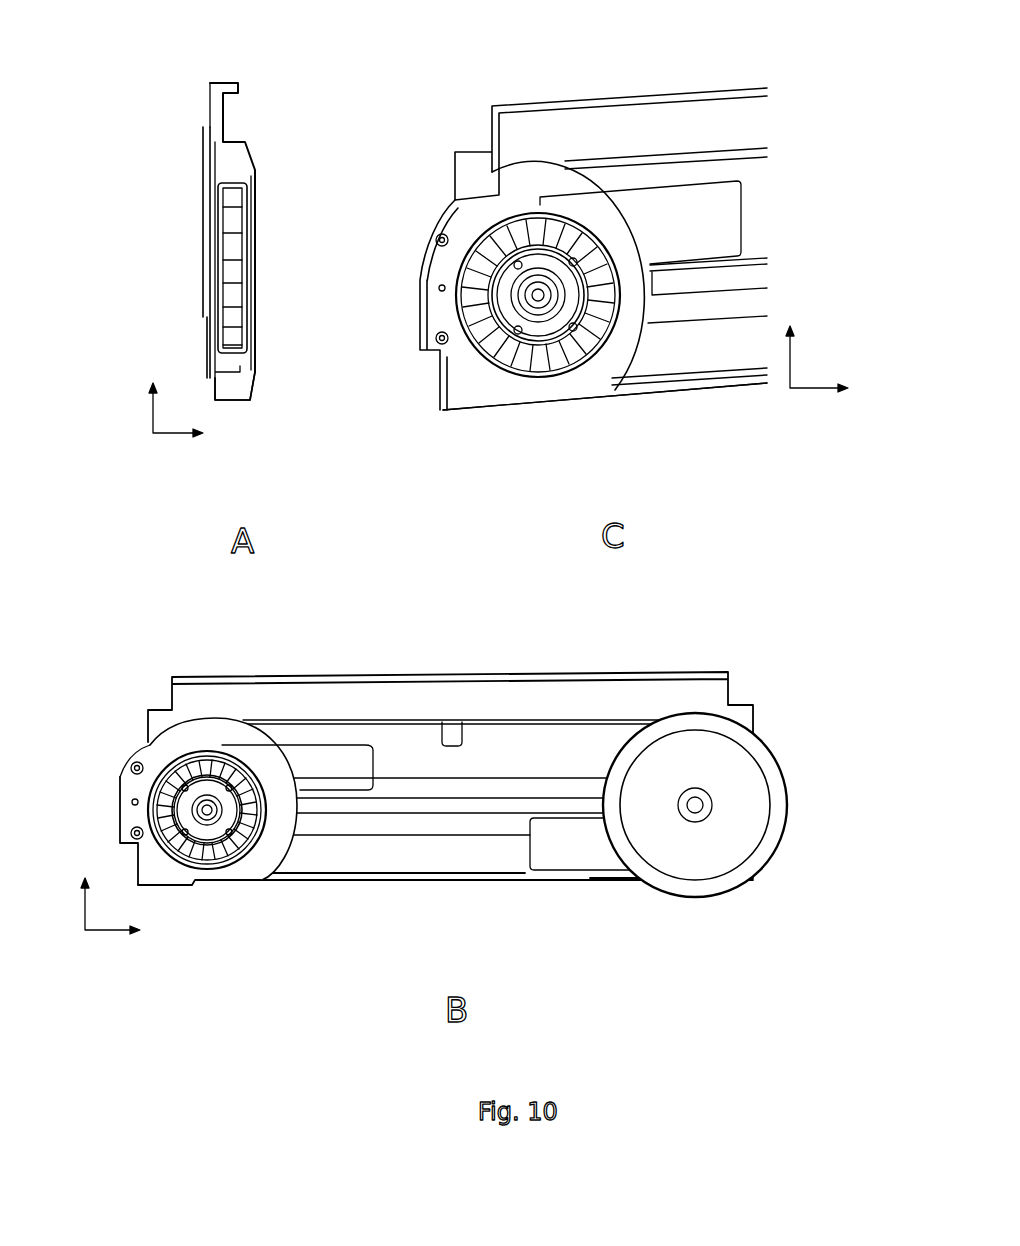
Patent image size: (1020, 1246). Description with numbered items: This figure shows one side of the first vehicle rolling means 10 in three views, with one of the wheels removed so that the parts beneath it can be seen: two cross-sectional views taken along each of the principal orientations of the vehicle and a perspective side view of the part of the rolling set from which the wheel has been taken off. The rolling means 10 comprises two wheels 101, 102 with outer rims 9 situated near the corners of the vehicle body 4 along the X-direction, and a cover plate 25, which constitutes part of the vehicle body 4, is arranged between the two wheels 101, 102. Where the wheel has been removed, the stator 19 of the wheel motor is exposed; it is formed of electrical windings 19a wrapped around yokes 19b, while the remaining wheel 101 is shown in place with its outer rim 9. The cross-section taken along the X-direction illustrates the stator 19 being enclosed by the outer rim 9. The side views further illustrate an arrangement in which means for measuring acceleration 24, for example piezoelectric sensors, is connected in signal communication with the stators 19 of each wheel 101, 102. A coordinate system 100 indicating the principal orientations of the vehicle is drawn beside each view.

The housing 4 is at (224, 124).
The fan motor 19 is at (246, 205).
The fan rotor blades 19a is at (558, 368).
The motor hub 19b is at (492, 370).
The guide plate 25 is at (206, 258).
The cover element 24 is at (704, 236).
The wheel 9 is at (250, 387).
The wheel axle 102 is at (235, 386).
The drive wheel 101 is at (742, 770).
The coordinate system 100 is at (153, 444).
The cleaning device 10 is at (760, 435).